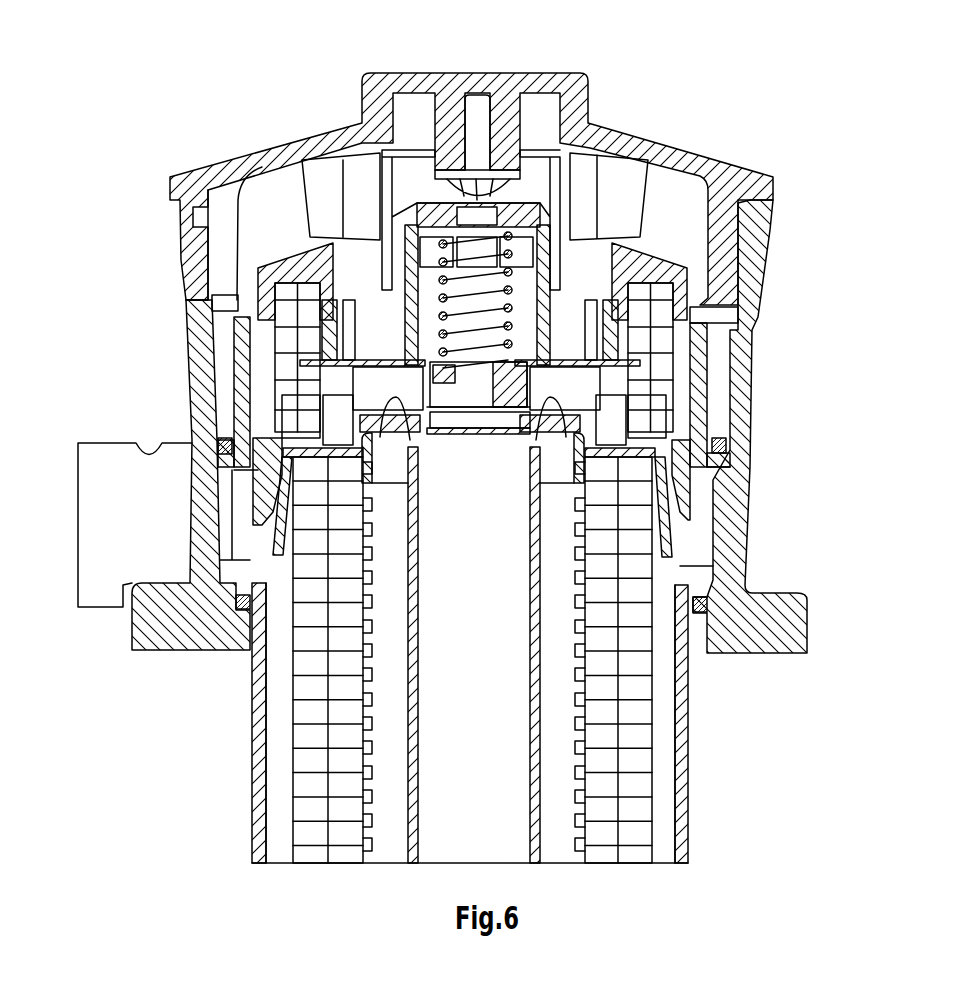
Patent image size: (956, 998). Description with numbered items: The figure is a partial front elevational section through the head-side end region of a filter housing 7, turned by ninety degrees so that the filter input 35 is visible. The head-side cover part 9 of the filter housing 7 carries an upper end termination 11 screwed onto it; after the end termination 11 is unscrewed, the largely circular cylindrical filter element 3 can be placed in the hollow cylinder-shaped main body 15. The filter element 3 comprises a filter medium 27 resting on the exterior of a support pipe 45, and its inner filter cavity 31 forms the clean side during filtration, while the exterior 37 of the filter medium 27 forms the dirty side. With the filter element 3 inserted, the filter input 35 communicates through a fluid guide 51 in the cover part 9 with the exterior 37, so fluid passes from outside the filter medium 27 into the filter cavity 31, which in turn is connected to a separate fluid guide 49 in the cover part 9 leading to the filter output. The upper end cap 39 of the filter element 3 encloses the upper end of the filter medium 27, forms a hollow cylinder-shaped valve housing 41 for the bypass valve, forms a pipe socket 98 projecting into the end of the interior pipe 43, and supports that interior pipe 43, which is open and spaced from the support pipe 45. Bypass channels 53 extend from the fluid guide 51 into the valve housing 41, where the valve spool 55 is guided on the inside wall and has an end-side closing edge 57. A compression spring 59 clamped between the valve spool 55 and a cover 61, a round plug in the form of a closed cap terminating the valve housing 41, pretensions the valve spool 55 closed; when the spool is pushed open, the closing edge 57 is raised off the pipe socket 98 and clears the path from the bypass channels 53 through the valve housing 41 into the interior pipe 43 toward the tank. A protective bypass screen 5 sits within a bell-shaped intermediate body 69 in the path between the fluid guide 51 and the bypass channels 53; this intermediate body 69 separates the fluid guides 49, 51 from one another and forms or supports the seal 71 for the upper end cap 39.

The filter element 3 is at (270, 736).
The protective bypass screen 5 is at (297, 318).
The filter housing 7 is at (132, 353).
The cover part 9 is at (198, 336).
The end termination 11 is at (680, 157).
The main body 15 is at (688, 828).
The filter medium 27 is at (317, 787).
The inner filter cavity 31 is at (323, 648).
The filter input 35 is at (150, 445).
The exterior of the filter medium 37 is at (657, 717).
The upper end cap 39 is at (322, 358).
The valve housing 41 is at (573, 233).
The interior pipe 43 is at (418, 623).
The support pipe 45 is at (370, 705).
The fluid guide 49 is at (258, 203).
The fluid guide 51 is at (692, 538).
The bypass channels 53 is at (517, 405).
The valve spool 55 is at (636, 246).
The closing edge 57 is at (428, 433).
The compression spring 59 is at (415, 222).
The cover 61 is at (528, 222).
The bell-shaped intermediate body 69 is at (313, 267).
The seal 71 is at (702, 316).
The pipe socket 98 is at (527, 434).